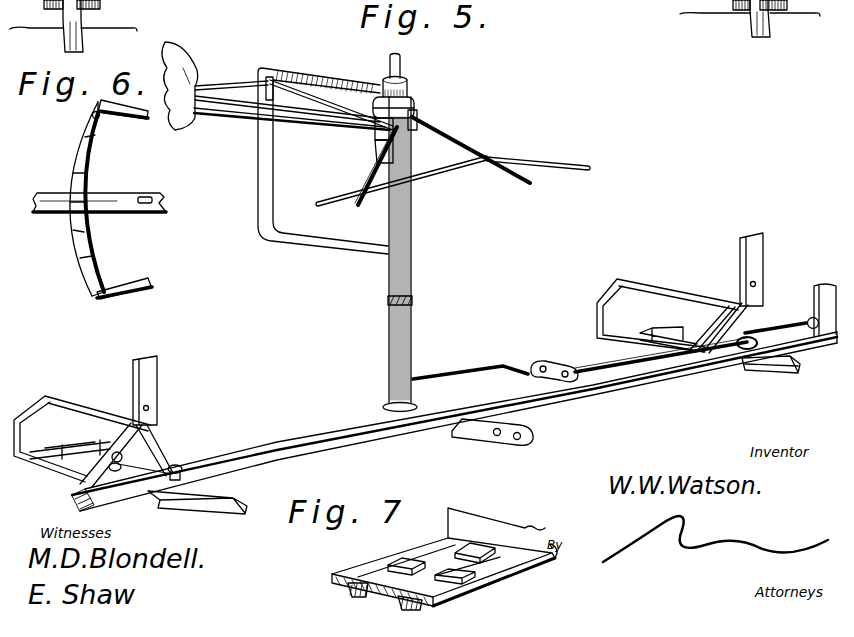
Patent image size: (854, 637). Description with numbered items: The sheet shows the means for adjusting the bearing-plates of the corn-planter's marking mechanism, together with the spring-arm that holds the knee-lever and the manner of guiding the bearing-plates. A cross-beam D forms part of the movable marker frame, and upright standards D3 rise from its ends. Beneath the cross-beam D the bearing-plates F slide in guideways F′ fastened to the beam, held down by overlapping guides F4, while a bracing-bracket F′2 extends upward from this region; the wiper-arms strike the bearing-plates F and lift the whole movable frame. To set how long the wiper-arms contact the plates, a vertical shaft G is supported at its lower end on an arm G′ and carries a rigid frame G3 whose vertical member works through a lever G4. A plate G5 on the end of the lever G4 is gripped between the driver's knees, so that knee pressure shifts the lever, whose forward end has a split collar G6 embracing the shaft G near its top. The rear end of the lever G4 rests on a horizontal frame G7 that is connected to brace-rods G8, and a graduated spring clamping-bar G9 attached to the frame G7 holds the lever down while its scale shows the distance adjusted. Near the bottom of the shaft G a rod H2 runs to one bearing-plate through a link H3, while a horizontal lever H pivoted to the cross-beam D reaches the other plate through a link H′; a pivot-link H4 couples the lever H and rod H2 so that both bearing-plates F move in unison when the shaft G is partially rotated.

In FIG. 5, the vertical shaft G is at (411, 278).
In FIG. 5, the arm G′ is at (450, 430).
In FIG. 5, the frame G3 is at (341, 84).
In FIG. 5, the lever G4 is at (319, 109).
In FIG. 6, the lever G4 is at (139, 184).
In FIG. 5, the plate G5 is at (183, 67).
In FIG. 5, the split collar G6 is at (416, 104).
In FIG. 5, the horizontal frame G7 is at (225, 122).
In FIG. 6, the horizontal frame G7 is at (131, 118).
In FIG. 5, the brace-rods G8 is at (357, 207).
In FIG. 5, the spring clamping-bar G9 is at (248, 89).
In FIG. 6, the spring clamping-bar G9 is at (75, 155).
In FIG. 5, the cross-beam D is at (366, 443).
In FIG. 5, the upright standards D3 is at (826, 276).
In FIG. 5, the bearing-plates F is at (194, 510).
In FIG. 7, the bearing-plates F is at (388, 595).
In FIG. 5, the guideways F′ is at (56, 470).
In FIG. 7, the guideways F′ is at (387, 558).
In FIG. 5, the bracing-bracket F′2 is at (143, 392).
In FIG. 7, the overlapping guides F4 is at (455, 573).
In FIG. 5, the horizontal lever H is at (316, 434).
In FIG. 5, the link H′ is at (150, 469).
In FIG. 5, the rod H2 is at (483, 370).
In FIG. 5, the link H3 is at (722, 334).
In FIG. 5, the pivot-link H4 is at (553, 367).